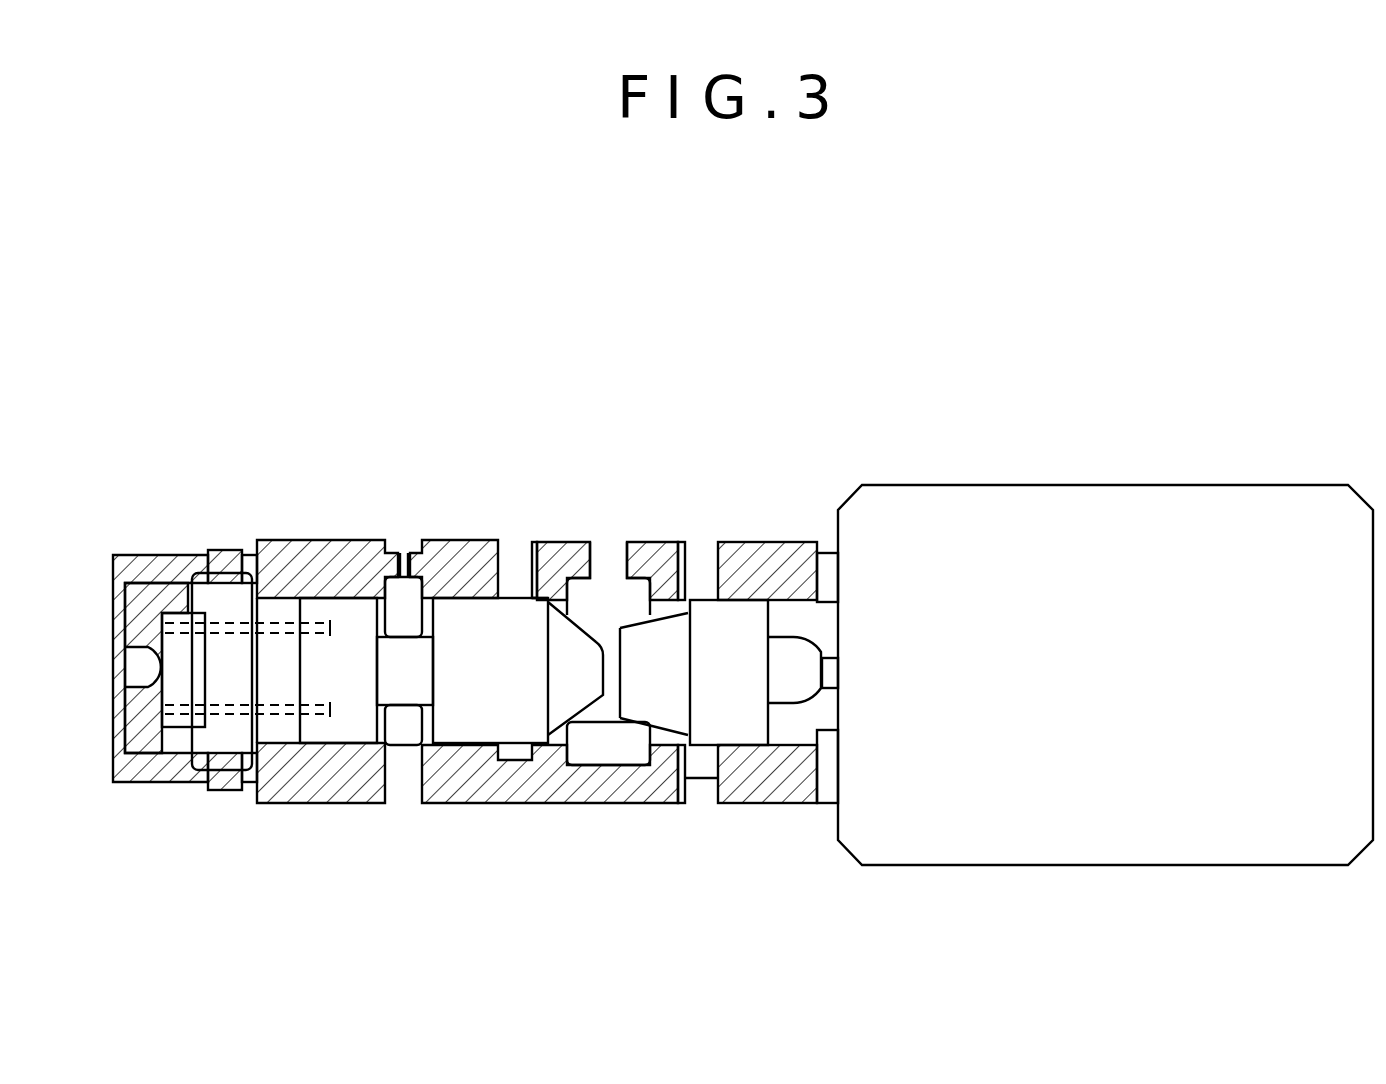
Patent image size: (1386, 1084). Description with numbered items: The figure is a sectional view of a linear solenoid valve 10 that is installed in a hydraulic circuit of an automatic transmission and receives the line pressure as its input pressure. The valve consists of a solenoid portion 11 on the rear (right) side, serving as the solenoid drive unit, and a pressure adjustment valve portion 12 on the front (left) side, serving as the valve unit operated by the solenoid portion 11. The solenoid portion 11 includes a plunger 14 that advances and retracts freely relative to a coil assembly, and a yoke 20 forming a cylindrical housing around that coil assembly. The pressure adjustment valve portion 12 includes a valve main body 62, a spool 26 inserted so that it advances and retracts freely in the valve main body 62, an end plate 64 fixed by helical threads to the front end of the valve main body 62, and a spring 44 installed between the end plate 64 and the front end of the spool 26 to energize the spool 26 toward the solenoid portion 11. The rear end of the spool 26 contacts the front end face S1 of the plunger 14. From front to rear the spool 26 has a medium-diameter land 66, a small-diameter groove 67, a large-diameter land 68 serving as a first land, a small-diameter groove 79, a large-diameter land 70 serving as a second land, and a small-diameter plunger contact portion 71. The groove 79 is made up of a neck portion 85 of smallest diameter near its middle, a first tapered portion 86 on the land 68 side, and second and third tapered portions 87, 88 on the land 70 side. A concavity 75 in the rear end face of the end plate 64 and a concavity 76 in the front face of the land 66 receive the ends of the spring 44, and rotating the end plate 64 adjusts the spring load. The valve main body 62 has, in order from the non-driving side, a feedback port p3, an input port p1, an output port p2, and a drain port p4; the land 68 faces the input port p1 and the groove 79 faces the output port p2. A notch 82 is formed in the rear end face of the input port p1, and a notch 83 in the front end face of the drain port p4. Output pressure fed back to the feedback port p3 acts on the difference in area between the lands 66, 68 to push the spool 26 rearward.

The linear solenoid valve 10 is at (848, 400).
The solenoid portion 11 is at (1118, 477).
The pressure adjustment valve portion 12 is at (512, 400).
The plunger 14 is at (832, 646).
The yoke 20 is at (1239, 695).
The spool 26 is at (747, 586).
The spring 44 is at (183, 712).
The valve main body 62 is at (296, 528).
The end plate 64 is at (145, 580).
The medium-diameter land 66 is at (354, 730).
The small-diameter groove 67 is at (386, 687).
The large-diameter land 68 is at (475, 687).
The large-diameter land 70 is at (713, 687).
The plunger contact portion 71 is at (782, 690).
The concavity 75 is at (178, 680).
The concavity 76 is at (318, 693).
The small-diameter groove 79 is at (601, 771).
The notch 82 is at (531, 543).
The notch 83 is at (682, 543).
The neck portion 85 is at (598, 705).
The first tapered portion 86 is at (582, 695).
The second tapered portion 87 is at (612, 695).
The third tapered portion 88 is at (642, 705).
The input port p1 is at (513, 535).
The output port p2 is at (608, 545).
The feedback port p3 is at (402, 543).
The drain port p4 is at (701, 538).
The front end face S1 is at (802, 700).